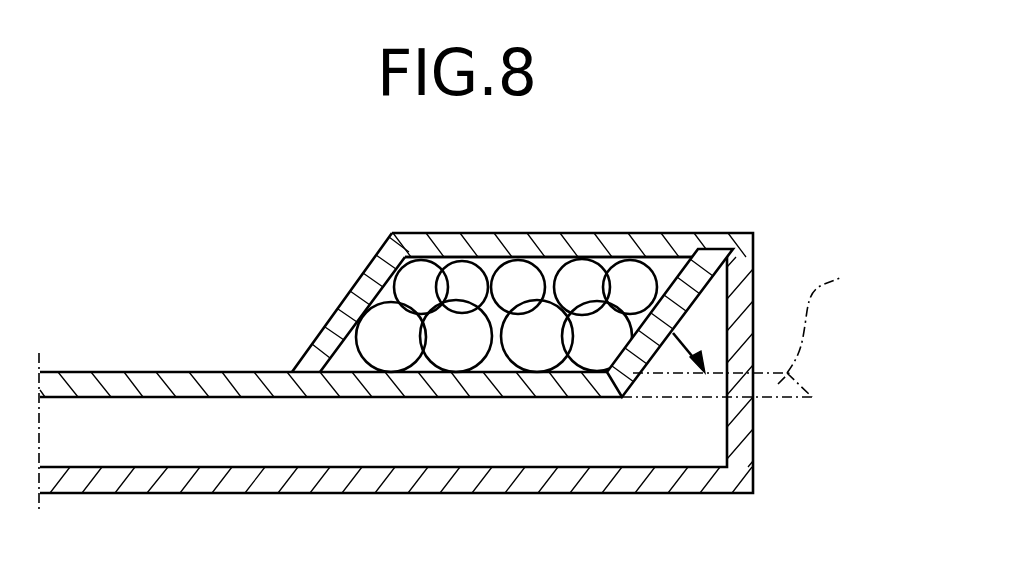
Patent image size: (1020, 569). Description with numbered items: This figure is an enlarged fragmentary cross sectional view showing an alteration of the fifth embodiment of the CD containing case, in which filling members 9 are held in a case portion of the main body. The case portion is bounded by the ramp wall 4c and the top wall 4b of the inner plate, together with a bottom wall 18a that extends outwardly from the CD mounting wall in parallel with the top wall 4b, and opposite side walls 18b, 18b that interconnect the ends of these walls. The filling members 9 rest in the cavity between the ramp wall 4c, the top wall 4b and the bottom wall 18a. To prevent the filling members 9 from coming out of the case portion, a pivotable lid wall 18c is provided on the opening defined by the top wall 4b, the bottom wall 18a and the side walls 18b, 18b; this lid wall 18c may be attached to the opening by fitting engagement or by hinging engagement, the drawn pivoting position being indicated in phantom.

The filling members 9 is at (427, 275).
The top wall 4b is at (620, 238).
The ramp wall 4c is at (360, 298).
The bottom wall 18a is at (507, 382).
The side walls 18b is at (549, 268).
The pivotable lid wall 18c is at (695, 277).